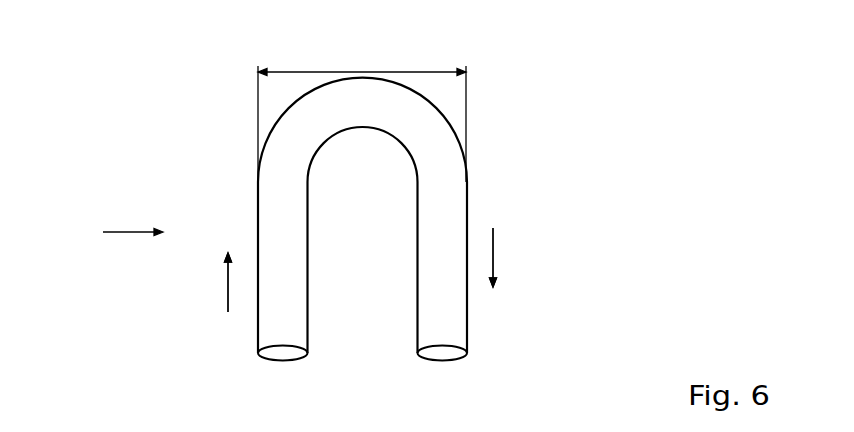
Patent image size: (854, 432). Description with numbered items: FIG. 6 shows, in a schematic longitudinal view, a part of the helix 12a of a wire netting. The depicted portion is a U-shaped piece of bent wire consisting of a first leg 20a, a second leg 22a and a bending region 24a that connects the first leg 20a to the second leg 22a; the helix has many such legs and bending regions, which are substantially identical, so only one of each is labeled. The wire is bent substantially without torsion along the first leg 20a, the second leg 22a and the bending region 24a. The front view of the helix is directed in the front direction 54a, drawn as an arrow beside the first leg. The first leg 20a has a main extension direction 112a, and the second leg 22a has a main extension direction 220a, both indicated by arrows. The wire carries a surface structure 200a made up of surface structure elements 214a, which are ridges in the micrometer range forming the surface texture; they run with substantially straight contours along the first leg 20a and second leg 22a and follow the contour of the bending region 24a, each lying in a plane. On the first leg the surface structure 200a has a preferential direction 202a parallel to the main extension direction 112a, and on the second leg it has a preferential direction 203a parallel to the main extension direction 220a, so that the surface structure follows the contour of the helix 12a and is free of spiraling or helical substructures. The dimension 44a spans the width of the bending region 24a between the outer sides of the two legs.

The surface structure 200a is at (346, 219).
The bending region 24a is at (344, 119).
The surface structure element 214a is at (286, 147).
The first leg 20a is at (238, 282).
The second leg 22a is at (437, 327).
The helix 12a is at (278, 357).
The bend width dimension 44a is at (396, 71).
The front direction 54a is at (133, 232).
The preferential direction 202a is at (223, 292).
The main extension direction 112a is at (167, 282).
The main extension direction 220a is at (495, 257).
The preferential direction 203a is at (582, 257).